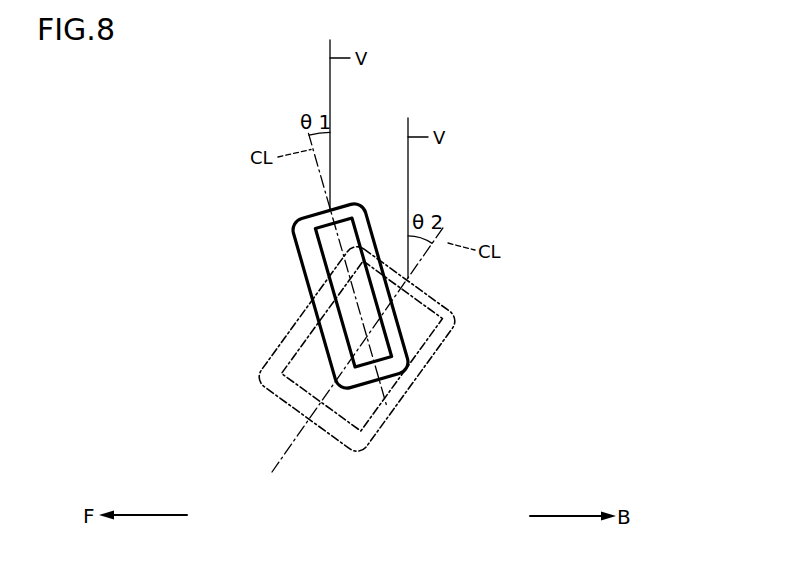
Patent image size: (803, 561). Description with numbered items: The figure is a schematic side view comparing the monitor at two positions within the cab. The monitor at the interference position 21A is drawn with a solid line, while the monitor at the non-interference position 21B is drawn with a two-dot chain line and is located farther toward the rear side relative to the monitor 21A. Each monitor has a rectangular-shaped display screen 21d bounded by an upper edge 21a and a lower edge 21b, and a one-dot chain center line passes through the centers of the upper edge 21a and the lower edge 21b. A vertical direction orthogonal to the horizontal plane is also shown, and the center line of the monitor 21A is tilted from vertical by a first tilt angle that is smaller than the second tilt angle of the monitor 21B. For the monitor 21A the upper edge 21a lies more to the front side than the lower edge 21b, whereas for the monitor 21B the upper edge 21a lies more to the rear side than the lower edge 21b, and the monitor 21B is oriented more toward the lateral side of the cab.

The monitor at the interference position 21A is at (333, 247).
The monitor at the non-interference position 21B is at (409, 332).
The upper edge 21a is at (324, 209).
The lower edge 21b is at (398, 378).
The display screen 21d is at (367, 210).